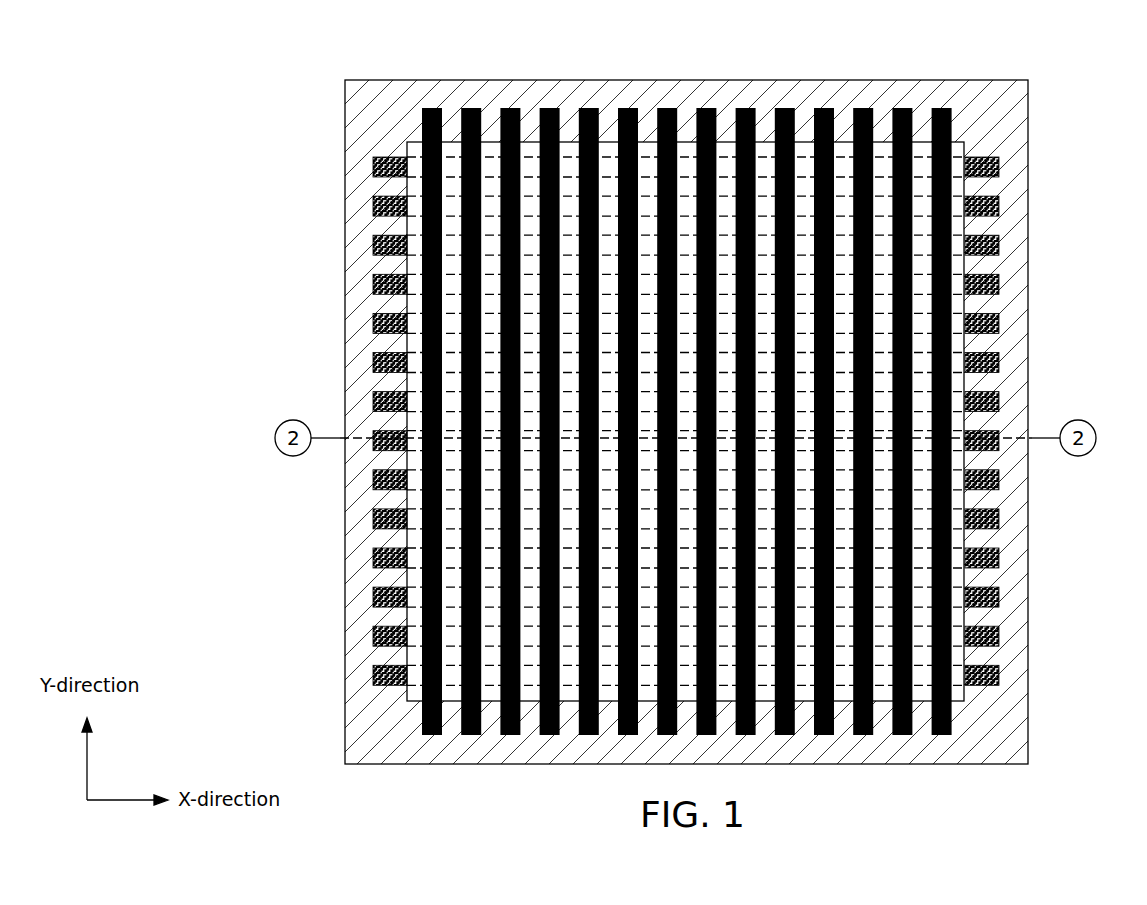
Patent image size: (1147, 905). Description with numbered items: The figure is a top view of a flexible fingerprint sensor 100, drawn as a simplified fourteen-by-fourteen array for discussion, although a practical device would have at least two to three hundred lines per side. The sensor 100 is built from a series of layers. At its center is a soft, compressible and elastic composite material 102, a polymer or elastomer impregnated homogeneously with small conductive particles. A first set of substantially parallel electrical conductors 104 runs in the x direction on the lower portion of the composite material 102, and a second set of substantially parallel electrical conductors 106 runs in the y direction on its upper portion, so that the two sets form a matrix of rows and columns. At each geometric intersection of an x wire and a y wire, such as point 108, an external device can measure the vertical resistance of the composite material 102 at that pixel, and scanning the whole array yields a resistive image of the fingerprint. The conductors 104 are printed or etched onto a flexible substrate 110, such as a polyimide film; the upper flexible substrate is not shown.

The flexible fingerprint sensor 100 is at (1020, 44).
The composite material 102 is at (958, 148).
The first set of electrical conductors 104 is at (996, 170).
The second set of electrical conductors 106 is at (425, 108).
The intersection point 108 is at (422, 688).
The flexible substrate 110 is at (393, 745).